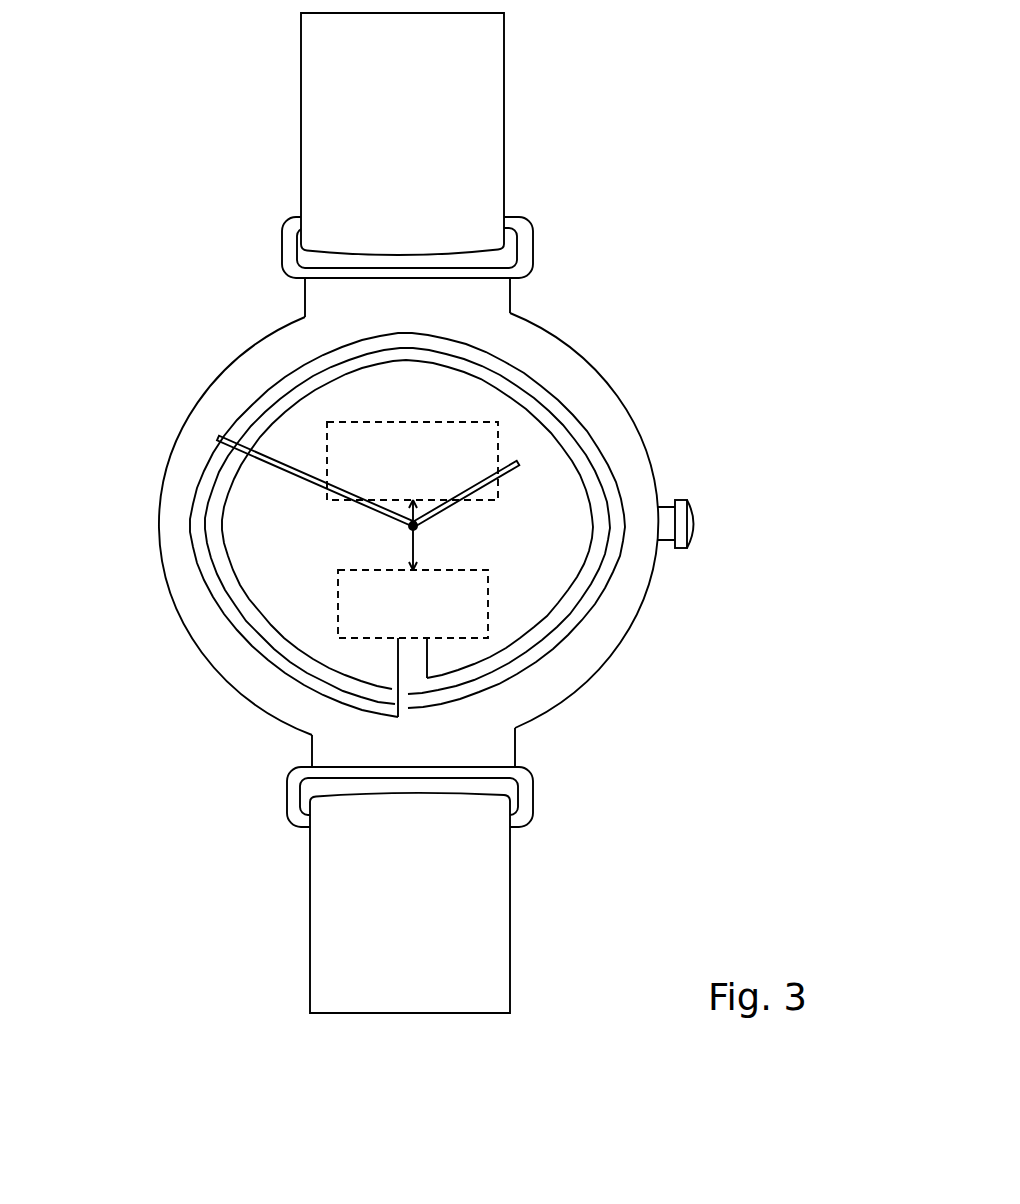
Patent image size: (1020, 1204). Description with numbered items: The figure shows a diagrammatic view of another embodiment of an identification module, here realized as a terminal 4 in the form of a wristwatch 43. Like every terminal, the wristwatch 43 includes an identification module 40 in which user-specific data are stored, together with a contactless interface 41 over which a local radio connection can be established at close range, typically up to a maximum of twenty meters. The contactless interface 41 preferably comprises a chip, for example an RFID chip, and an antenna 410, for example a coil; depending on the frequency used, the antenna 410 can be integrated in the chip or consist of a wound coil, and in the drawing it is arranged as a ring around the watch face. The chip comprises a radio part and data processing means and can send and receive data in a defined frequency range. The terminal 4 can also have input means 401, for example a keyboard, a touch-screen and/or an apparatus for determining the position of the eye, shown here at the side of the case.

The terminal 4 is at (428, 515).
The wristwatch 43 is at (143, 672).
The input means 401 is at (697, 520).
The antenna 410 is at (570, 623).
The identification module 40 is at (412, 461).
The contactless interface 41 is at (413, 643).